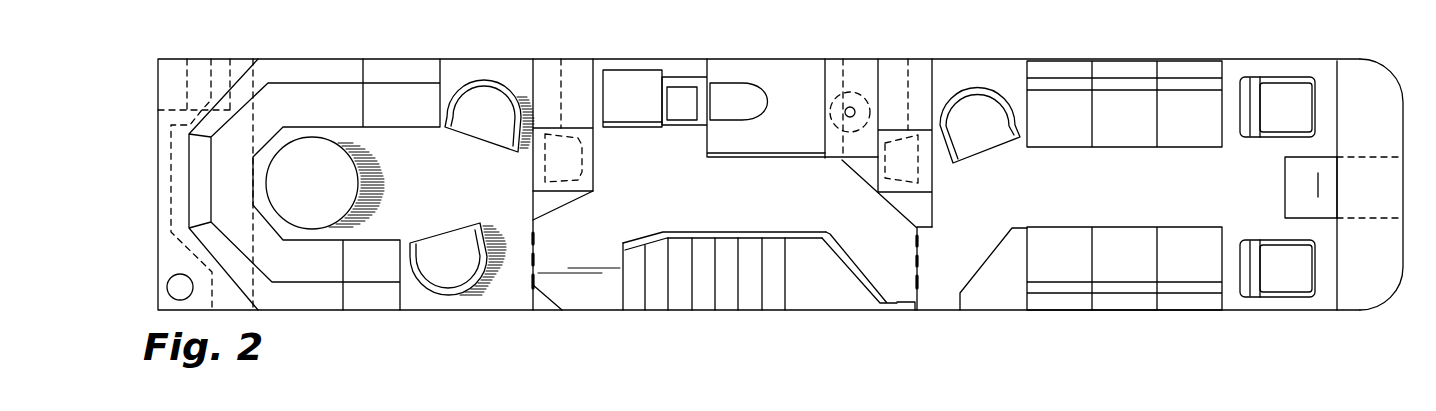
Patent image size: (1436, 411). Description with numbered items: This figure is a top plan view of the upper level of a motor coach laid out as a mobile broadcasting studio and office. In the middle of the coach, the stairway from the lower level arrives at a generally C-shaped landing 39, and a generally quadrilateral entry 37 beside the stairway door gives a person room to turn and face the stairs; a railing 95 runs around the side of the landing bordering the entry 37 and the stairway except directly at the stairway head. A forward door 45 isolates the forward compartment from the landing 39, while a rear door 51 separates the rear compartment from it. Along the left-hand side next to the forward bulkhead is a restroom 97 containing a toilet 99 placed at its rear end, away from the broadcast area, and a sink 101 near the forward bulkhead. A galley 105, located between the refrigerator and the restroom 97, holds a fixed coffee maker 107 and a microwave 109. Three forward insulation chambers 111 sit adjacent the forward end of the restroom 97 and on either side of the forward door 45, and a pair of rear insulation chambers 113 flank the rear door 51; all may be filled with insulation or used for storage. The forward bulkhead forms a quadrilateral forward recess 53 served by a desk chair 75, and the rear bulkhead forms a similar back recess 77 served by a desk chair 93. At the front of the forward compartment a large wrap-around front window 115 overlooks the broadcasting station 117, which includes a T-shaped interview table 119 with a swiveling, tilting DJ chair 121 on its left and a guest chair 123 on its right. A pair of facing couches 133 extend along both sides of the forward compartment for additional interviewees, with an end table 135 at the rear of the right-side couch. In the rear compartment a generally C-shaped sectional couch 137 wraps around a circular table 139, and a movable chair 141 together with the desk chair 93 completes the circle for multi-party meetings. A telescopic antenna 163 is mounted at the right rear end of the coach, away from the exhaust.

The entry 37 is at (822, 302).
The landing 39 is at (602, 300).
The forward door 45 is at (921, 250).
The rear door 51 is at (537, 250).
The forward recess 53 is at (910, 80).
The desk chair 75 is at (977, 87).
The back recess 77 is at (545, 70).
The desk chair 93 is at (492, 77).
The railing 95 is at (718, 232).
The restroom 97 is at (799, 59).
The toilet 99 is at (735, 82).
The sink 101 is at (852, 67).
The galley 105 is at (687, 76).
The coffee maker 107 is at (635, 80).
The microwave 109 is at (690, 122).
The forward insulation chambers 111 is at (860, 167).
The rear insulation chambers 113 is at (537, 203).
The front window 115 is at (1405, 108).
The broadcasting station 117 is at (1327, 84).
The interview table 119 is at (1283, 187).
The DJ chair 121 is at (1250, 77).
The guest chair 123 is at (1268, 297).
The facing couches 133 is at (1127, 61).
The end table 135 is at (993, 312).
The sectional couch 137 is at (326, 59).
The circular table 139 is at (334, 194).
The movable chair 141 is at (447, 293).
The telescopic antenna 163 is at (168, 283).